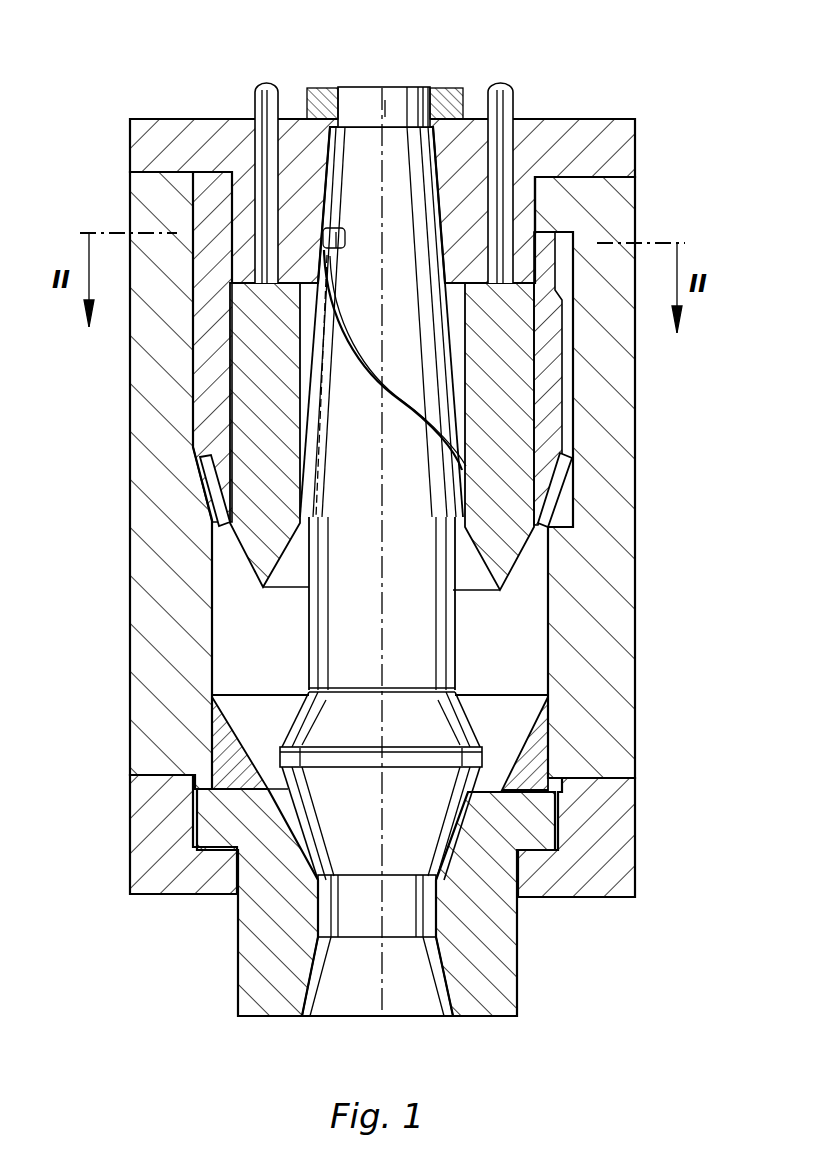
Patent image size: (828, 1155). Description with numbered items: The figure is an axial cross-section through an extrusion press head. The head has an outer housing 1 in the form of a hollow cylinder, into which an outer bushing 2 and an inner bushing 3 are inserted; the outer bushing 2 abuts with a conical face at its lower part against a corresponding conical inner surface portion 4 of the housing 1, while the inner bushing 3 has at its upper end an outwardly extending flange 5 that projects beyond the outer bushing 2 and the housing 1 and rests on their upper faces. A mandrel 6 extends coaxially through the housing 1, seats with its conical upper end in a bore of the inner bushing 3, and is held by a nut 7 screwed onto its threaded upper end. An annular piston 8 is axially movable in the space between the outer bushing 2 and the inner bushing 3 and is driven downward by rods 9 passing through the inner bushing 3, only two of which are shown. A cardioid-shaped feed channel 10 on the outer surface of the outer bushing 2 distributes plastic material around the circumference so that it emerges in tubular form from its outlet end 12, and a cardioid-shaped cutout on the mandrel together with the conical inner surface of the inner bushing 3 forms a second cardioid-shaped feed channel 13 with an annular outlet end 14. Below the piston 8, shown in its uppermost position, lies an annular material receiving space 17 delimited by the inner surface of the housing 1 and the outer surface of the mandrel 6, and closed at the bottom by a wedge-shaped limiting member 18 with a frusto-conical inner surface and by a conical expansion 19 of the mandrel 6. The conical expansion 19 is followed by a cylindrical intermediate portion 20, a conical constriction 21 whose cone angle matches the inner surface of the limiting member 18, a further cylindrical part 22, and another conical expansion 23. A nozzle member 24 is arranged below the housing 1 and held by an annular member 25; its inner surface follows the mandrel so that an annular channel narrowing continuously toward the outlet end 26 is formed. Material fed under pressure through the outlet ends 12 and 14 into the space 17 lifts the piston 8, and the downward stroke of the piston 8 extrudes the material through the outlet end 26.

The outer housing 1 is at (170, 602).
The outer bushing 2 is at (212, 374).
The inner bushing 3 is at (246, 213).
The conical inner surface portion 4 is at (195, 480).
The flange 5 is at (150, 146).
The mandrel 6 is at (392, 612).
The nut 7 is at (447, 100).
The annular piston 8 is at (250, 416).
The rods 9 is at (261, 100).
The cardioid-shaped feed channel 10 is at (565, 388).
The outlet end 12 is at (214, 514).
The cardioid-shaped feed channel 13 is at (315, 406).
The annular outlet end 14 is at (312, 512).
The annular material receiving space 17 is at (236, 641).
The limiting member 18 is at (216, 742).
The conical expansion 19 is at (392, 736).
The cylindrical intermediate portion 20 is at (426, 768).
The conical constriction 21 is at (392, 834).
The cylindrical part 22 is at (392, 922).
The conical expansion 23 is at (392, 991).
The nozzle member 24 is at (262, 946).
The annular member 25 is at (160, 822).
The outlet end 26 is at (303, 1022).